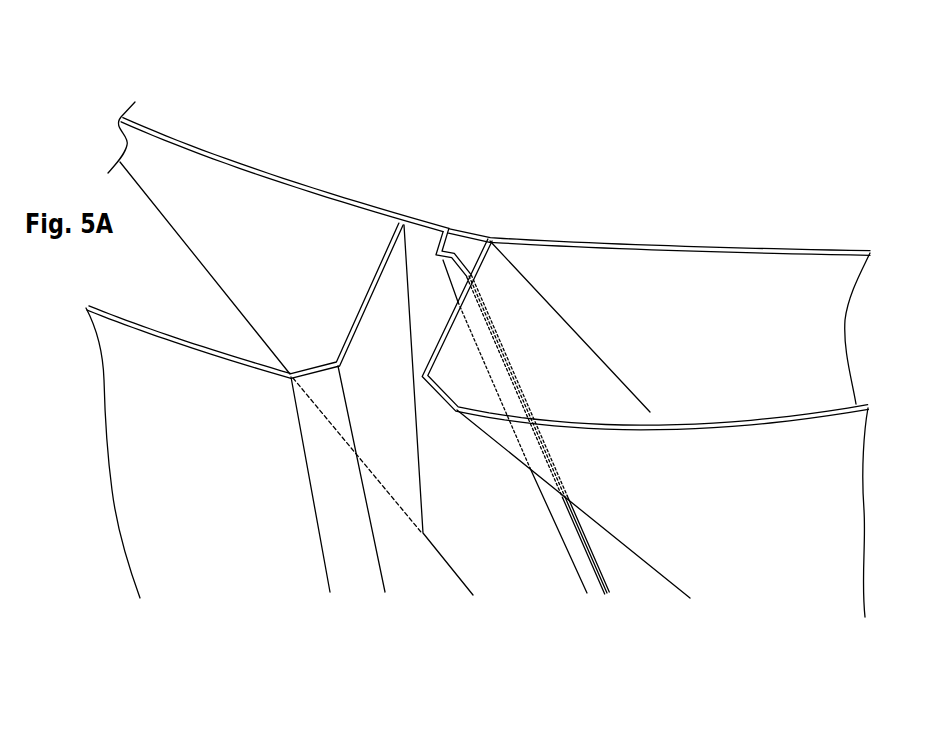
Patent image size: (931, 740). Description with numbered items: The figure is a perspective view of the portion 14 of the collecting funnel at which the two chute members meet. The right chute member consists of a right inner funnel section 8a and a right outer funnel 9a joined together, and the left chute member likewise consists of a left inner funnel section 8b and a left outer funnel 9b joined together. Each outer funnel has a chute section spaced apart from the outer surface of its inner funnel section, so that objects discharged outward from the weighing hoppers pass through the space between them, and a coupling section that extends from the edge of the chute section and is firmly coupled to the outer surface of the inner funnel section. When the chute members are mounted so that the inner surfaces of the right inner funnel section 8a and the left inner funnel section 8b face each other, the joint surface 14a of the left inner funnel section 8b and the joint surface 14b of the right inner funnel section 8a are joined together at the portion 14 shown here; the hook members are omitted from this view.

The right inner funnel section 8a is at (725, 245).
The left inner funnel section 8b is at (280, 178).
The right outer funnel 9a is at (813, 408).
The left outer funnel 9b is at (163, 337).
The joined portion 14 is at (393, 58).
The joint surface 14a is at (445, 280).
The joint surface 14b is at (452, 250).